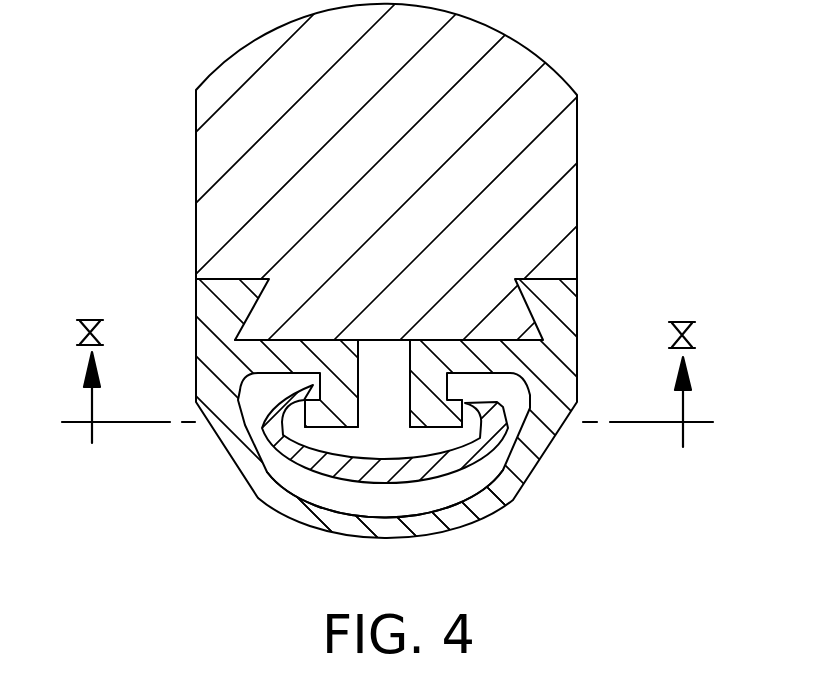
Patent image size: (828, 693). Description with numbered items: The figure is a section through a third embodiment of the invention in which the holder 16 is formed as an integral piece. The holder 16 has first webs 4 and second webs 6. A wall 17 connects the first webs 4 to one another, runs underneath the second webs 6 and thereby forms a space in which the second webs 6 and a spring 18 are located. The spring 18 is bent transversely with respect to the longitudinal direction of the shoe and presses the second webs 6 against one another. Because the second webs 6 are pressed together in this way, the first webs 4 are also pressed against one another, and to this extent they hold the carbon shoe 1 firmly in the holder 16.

The carbon shoe 1 is at (543, 160).
The first webs 4 is at (212, 305).
The second webs 6 is at (450, 415).
The holder 16 is at (414, 346).
The wall 17 is at (454, 517).
The spring 18 is at (497, 445).